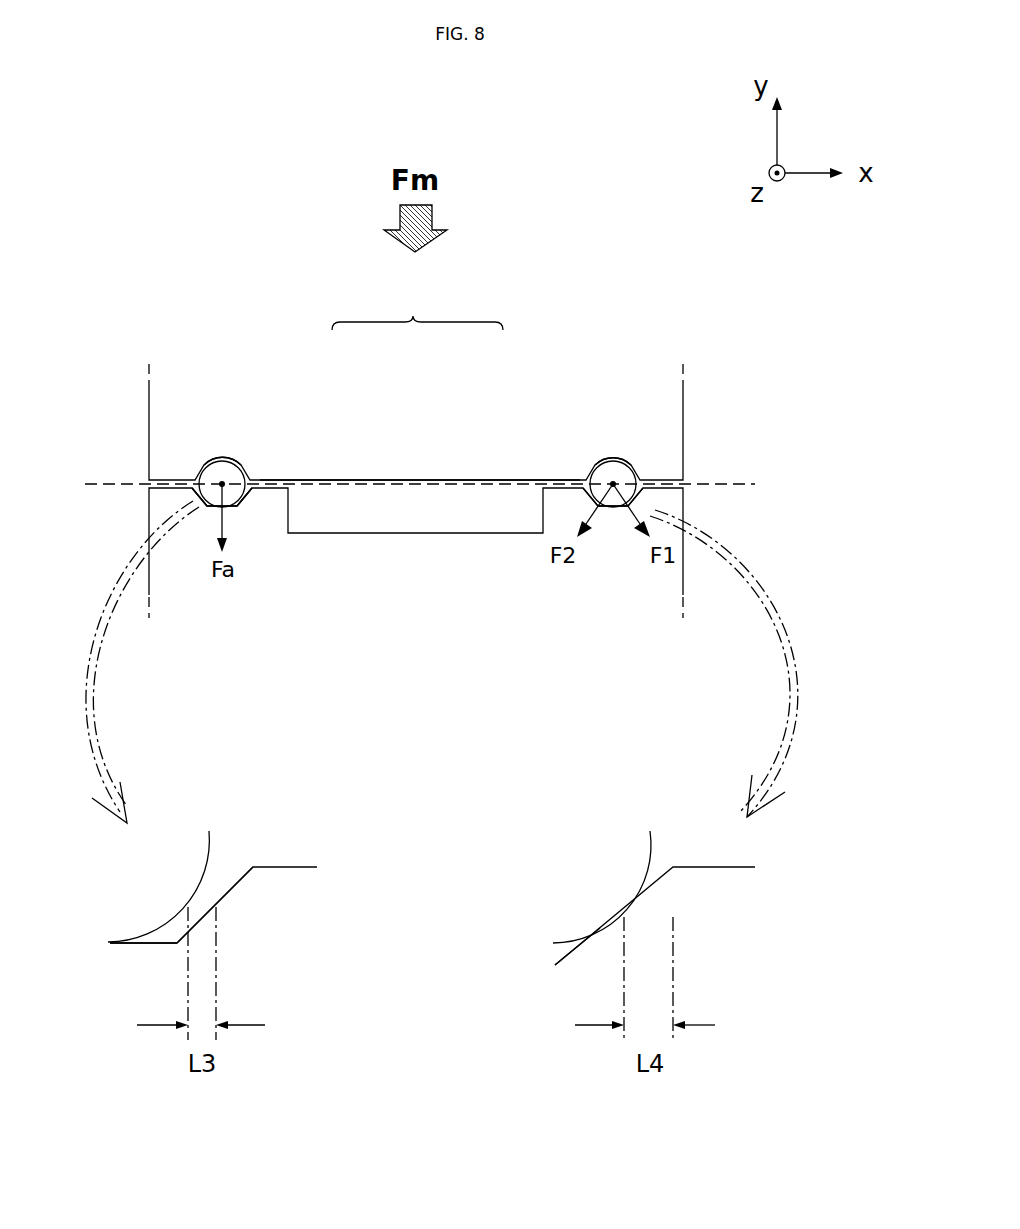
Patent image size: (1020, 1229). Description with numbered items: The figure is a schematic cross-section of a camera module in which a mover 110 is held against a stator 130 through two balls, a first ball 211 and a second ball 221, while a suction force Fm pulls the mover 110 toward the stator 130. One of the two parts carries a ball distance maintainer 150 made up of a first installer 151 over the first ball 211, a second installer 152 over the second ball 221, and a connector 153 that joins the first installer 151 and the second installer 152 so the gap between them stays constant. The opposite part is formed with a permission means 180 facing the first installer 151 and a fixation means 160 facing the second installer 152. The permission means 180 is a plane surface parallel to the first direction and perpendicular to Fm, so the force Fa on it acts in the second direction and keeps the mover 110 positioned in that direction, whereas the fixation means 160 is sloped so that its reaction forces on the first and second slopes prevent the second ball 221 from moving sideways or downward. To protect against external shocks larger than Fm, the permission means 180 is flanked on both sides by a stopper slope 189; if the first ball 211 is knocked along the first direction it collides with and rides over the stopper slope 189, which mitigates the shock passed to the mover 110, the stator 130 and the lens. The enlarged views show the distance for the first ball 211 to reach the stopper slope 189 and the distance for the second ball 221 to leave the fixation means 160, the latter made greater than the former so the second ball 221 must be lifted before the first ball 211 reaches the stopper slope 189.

The mover 110 is at (683, 432).
The stator 130 is at (683, 508).
The ball distance maintainer 150 is at (417, 386).
The first installer 151 is at (232, 458).
The second installer 152 is at (603, 459).
The connector 153 is at (422, 474).
The fixation means 160 is at (603, 508).
The permission means 180 is at (203, 507).
The stopper slope 189 is at (190, 495).
The first ball 211 is at (202, 475).
The second ball 221 is at (627, 477).